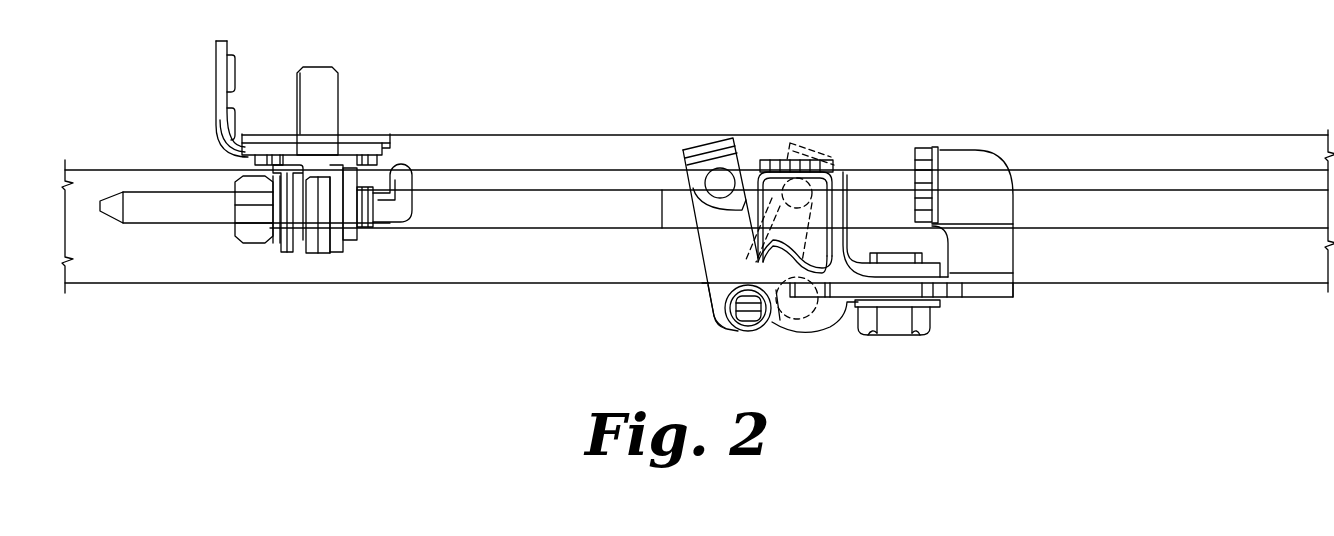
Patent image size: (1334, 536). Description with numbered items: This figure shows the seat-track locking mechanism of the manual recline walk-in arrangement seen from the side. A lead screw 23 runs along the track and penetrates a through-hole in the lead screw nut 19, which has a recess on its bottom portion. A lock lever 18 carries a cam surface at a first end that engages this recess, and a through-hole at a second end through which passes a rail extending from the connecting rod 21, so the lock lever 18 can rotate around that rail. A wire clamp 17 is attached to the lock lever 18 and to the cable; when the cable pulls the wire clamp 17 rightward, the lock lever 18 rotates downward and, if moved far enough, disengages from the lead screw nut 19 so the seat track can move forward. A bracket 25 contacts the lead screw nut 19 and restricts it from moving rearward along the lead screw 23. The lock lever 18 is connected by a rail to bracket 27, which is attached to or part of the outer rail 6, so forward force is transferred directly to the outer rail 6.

The outer rail 6 is at (450, 283).
The wire clamp 17 is at (700, 144).
The lock lever 18 is at (717, 295).
The lead screw nut 19 is at (758, 175).
The connecting rod 21 is at (745, 323).
The lead screw 23 is at (1190, 223).
The bracket 25 is at (838, 167).
The bracket 27 is at (793, 326).